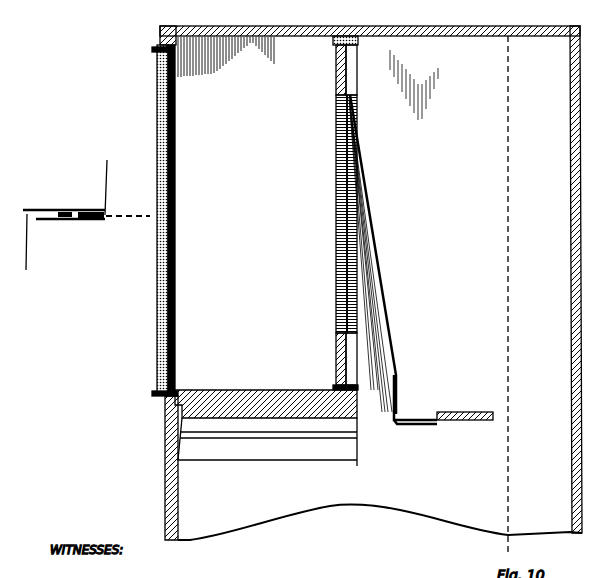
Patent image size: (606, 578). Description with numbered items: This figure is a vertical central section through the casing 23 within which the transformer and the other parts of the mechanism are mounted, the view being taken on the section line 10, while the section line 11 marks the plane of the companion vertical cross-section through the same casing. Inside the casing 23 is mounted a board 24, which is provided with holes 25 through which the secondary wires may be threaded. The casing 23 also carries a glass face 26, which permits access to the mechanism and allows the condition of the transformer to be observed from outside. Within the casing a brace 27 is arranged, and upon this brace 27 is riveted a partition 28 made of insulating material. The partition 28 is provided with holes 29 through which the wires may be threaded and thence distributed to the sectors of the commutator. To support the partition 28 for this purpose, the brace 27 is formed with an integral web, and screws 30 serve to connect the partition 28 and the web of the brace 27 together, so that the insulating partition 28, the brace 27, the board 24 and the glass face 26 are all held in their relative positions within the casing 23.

The section line 10 is at (520, 569).
The section line 11 is at (86, 215).
The casing 23 is at (572, 391).
The board 24 is at (466, 406).
The holes 25 is at (468, 421).
The glass face 26 is at (160, 318).
The brace 27 is at (376, 367).
The partition 28 is at (350, 79).
The holes 29 is at (344, 52).
The screws 30 is at (343, 95).